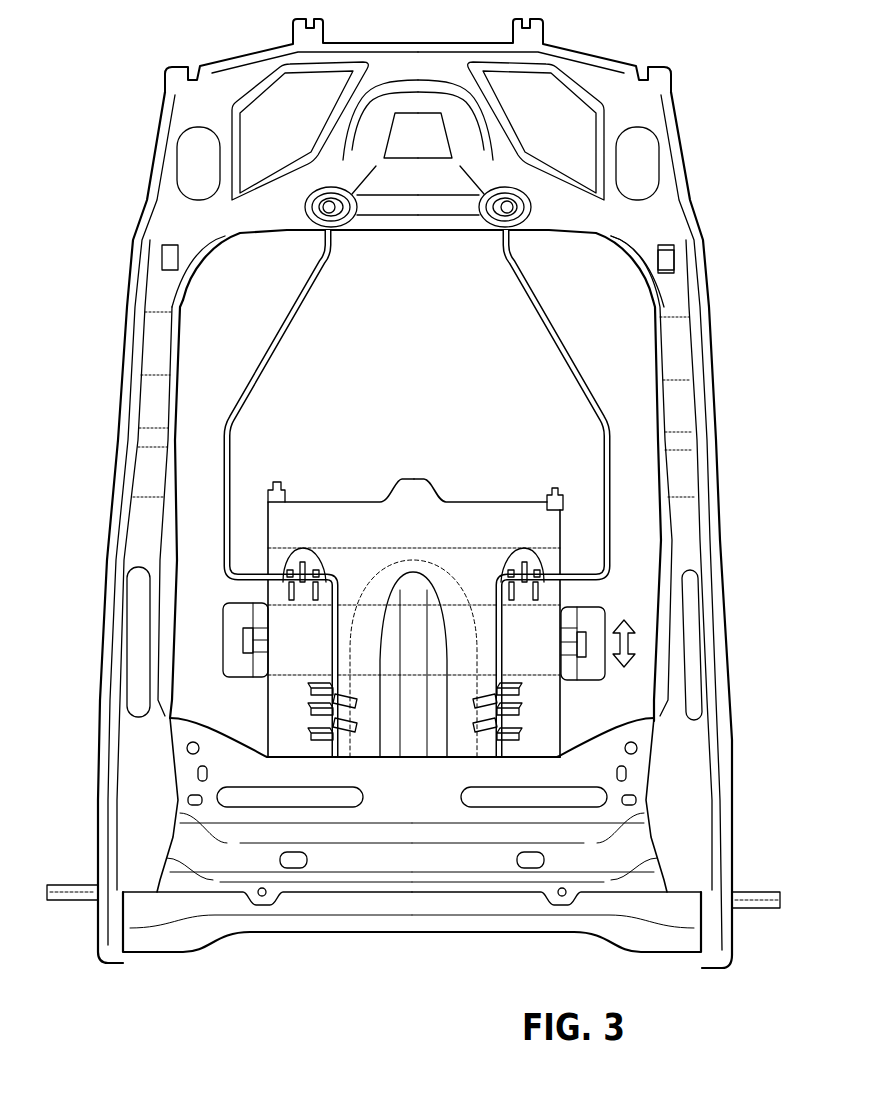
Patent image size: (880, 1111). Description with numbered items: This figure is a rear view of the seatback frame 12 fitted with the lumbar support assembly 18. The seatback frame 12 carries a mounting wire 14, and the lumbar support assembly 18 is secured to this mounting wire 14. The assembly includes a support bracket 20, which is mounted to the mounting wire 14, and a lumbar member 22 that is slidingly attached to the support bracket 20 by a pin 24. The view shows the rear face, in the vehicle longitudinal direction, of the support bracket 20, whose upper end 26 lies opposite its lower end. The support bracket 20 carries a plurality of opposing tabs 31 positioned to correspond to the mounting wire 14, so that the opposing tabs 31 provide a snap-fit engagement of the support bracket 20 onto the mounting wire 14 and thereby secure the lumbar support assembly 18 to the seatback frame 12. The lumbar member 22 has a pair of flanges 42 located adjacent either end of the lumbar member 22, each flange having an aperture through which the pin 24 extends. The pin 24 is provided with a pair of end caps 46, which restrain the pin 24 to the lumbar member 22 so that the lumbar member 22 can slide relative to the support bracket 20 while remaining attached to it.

The seatback frame 12 is at (673, 200).
The mounting wire 14 is at (552, 320).
The lumbar support assembly 18 is at (406, 398).
The support bracket 20 is at (310, 500).
The lumbar member 22 is at (593, 606).
The pin 24 is at (277, 603).
The upper end 26 is at (476, 500).
The opposing tabs 31 is at (305, 560).
The flanges 42 is at (257, 678).
The end caps 46 is at (243, 640).